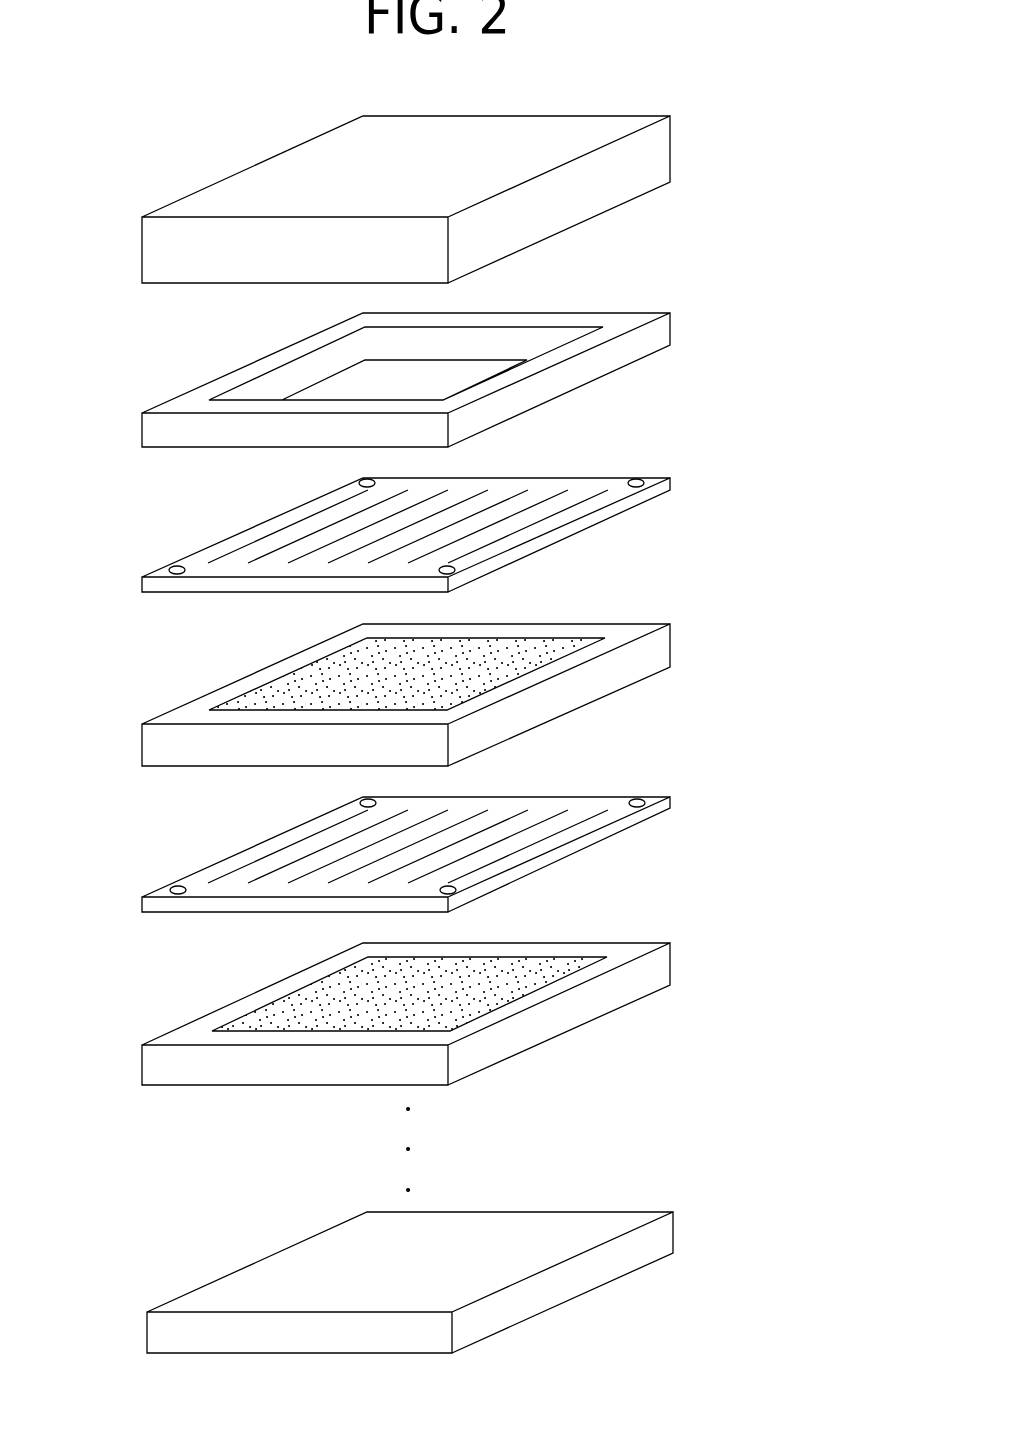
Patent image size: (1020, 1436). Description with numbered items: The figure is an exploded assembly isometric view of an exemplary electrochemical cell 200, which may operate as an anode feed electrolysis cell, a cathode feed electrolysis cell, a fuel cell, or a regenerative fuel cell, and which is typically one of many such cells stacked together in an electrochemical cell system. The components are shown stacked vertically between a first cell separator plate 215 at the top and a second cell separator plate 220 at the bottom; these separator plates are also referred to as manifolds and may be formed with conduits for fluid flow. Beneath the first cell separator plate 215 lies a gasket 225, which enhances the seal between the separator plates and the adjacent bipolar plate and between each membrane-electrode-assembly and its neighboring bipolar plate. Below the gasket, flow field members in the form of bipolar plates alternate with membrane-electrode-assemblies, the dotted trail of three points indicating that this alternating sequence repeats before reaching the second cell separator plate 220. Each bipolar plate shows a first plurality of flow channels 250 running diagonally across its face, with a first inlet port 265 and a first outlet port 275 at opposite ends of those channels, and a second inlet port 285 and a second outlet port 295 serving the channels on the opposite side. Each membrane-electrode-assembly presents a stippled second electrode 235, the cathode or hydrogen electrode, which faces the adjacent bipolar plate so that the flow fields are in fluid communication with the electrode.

The electrochemical cell 200 is at (105, 158).
The first cell separator plate 215 is at (672, 148).
The gasket 225 is at (672, 325).
The first plurality of flow channels 250 is at (268, 535).
The second inlet port 285 is at (362, 482).
The first outlet port 275 is at (636, 481).
The first inlet port 265 is at (178, 567).
The second outlet port 295 is at (457, 565).
The second electrode 235 is at (330, 682).
The second cell separator plate 220 is at (675, 1232).